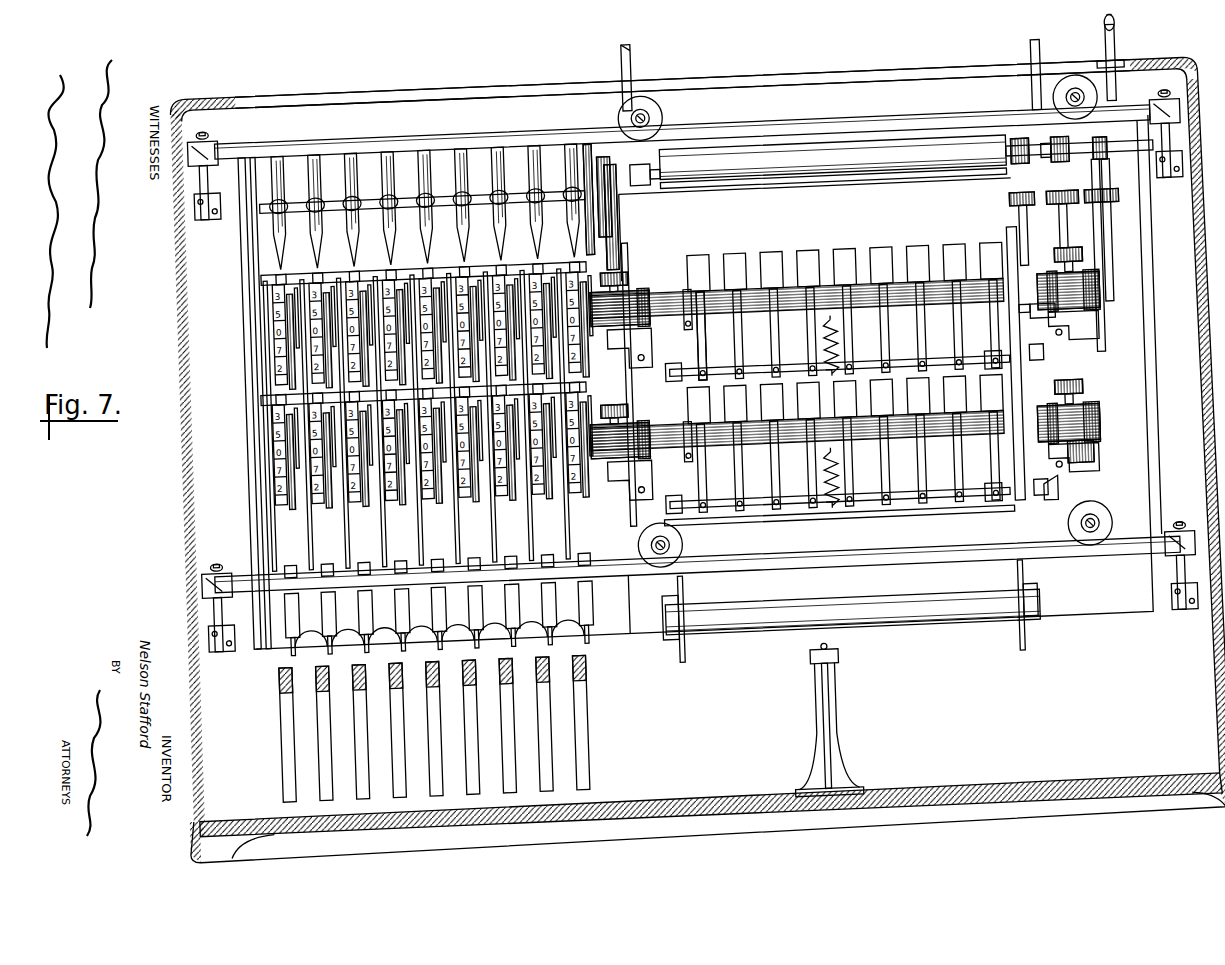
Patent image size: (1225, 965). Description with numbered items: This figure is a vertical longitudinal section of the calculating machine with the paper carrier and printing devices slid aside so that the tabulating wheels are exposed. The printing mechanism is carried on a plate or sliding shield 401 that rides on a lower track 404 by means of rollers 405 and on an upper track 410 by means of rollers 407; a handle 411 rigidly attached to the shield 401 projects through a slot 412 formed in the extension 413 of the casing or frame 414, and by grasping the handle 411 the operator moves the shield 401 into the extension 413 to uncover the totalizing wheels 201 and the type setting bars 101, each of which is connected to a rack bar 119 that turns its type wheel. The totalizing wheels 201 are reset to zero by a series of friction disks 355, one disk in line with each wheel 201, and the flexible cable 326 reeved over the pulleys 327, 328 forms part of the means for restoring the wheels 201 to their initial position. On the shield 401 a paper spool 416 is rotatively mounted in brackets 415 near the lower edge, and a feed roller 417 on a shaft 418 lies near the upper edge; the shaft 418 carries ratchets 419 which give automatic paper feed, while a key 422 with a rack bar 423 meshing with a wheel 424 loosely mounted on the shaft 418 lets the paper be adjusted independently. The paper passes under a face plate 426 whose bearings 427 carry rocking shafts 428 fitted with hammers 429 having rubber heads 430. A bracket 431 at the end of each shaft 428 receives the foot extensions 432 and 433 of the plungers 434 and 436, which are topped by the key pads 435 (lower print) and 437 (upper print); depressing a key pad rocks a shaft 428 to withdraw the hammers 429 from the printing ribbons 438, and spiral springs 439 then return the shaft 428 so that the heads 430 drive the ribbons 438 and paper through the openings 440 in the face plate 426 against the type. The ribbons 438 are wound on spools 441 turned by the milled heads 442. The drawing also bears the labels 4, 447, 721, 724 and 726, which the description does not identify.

The wheel 4 is at (668, 566).
The type setting bar 101 is at (352, 677).
The rack bar 119 is at (541, 535).
The totalizing wheel 201 is at (265, 362).
The flexible cable 326 is at (810, 722).
The pulley 327 is at (820, 686).
The pulley 328 is at (822, 772).
The friction disk 355 is at (402, 160).
The sliding shield 401 is at (612, 652).
The track 404 is at (905, 596).
The roller 405 is at (1091, 556).
The roller 407 is at (662, 137).
The track 410 is at (838, 146).
The handle 411 is at (1104, 68).
The slot 412 is at (835, 100).
The extension 413 is at (1150, 102).
The casing or frame 414 is at (170, 323).
The bracket 415 is at (668, 612).
The paper spool 416 is at (870, 656).
The feed roller 417 is at (810, 205).
The shaft 418 is at (640, 207).
The ratchet 419 is at (1012, 200).
The key 422 is at (1100, 238).
The rack bar 423 is at (1106, 222).
The wheel 424 is at (1100, 200).
The face plate 426 is at (762, 205).
The bearing 427 is at (664, 402).
The rocking shaft 428 is at (890, 390).
The hammer 429 is at (694, 345).
The hammer head 430 is at (765, 322).
The bracket 431 is at (1050, 390).
The foot extension 432 is at (1065, 487).
The foot extension 433 is at (1012, 360).
The plunger 434 is at (1060, 500).
The key pad 435 is at (1006, 236).
The plunger 436 is at (1052, 250).
The key pad 437 is at (1045, 195).
The printing ribbon 438 is at (660, 315).
The spiral spring 439 is at (829, 352).
The opening 440 is at (740, 277).
The spool 441 is at (626, 296).
The milled head 442 is at (615, 424).
The drums 447 is at (1095, 350).
The stops 721 is at (560, 610).
The number racks 724 is at (258, 460).
The scalloped plate 726 is at (565, 626).